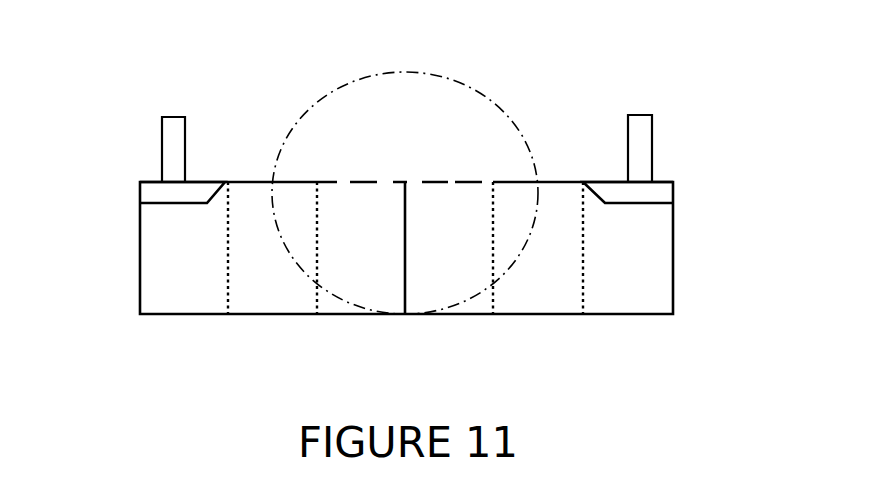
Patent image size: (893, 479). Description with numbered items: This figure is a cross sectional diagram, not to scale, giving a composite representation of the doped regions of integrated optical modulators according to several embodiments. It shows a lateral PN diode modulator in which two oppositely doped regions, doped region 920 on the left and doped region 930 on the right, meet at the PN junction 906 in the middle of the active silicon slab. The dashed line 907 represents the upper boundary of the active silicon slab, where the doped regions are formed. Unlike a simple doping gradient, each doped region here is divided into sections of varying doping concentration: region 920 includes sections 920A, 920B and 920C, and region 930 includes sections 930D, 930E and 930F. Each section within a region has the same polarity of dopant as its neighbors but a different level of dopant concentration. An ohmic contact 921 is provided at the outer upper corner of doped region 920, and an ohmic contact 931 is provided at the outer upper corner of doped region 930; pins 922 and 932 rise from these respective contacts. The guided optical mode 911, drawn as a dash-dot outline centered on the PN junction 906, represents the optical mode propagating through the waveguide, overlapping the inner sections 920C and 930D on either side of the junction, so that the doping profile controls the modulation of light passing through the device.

The PN junction 906 is at (402, 197).
The dashed line 907 is at (448, 180).
The guided optical mode 911 is at (303, 115).
The doped region 920 is at (140, 262).
The section 920A is at (182, 293).
The section 920B is at (283, 295).
The section 920C is at (367, 295).
The ohmic contact 921 is at (145, 180).
The P-side terminal pin 922 is at (173, 128).
The doped region 930 is at (673, 267).
The section 930D is at (438, 293).
The section 930E is at (533, 293).
The section 930F is at (642, 290).
The ohmic contact 931 is at (667, 180).
The N-side terminal pin 932 is at (640, 127).